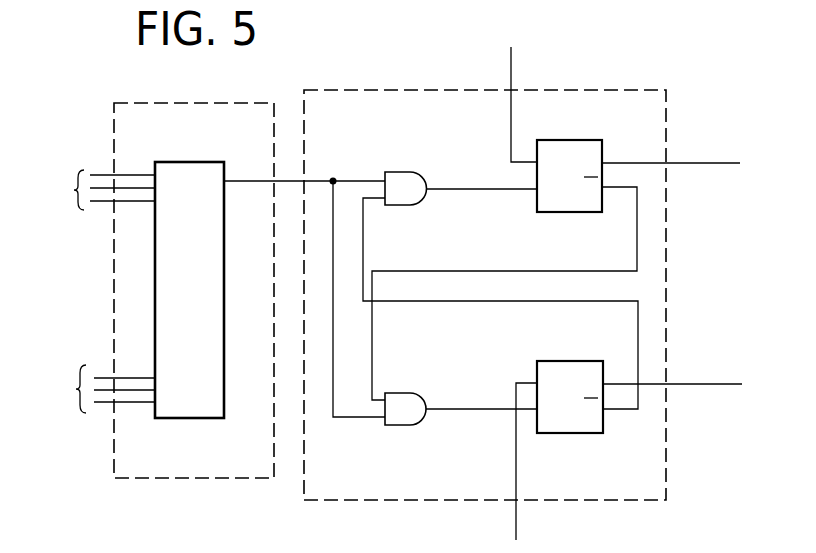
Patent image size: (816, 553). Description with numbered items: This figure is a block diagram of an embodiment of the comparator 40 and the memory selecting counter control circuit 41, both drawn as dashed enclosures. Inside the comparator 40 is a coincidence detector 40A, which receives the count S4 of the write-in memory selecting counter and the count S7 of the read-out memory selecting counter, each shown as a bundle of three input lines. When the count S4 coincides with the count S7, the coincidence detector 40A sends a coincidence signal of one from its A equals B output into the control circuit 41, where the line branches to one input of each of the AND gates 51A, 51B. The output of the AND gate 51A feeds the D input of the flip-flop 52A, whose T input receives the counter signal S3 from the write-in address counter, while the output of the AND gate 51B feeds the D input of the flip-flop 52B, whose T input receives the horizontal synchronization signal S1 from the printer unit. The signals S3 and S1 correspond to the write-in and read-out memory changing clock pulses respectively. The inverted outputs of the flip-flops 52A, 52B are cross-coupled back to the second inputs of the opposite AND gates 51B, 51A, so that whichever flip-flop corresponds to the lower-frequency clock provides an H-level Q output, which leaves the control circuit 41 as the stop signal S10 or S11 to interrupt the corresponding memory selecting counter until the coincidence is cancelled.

The comparator 40 is at (114, 280).
The coincidence detector 40A is at (190, 418).
The memory selecting counter control circuit 41 is at (430, 88).
The AND gate 51A is at (403, 205).
The AND gate 51B is at (405, 425).
The flip-flop 52A is at (563, 212).
The flip-flop 52B is at (572, 433).
The horizontal synchronization signal S1 is at (516, 520).
The counter signal S3 is at (511, 60).
The count of the write-in memory selecting counter S4 is at (96, 190).
The count of the read-out memory selecting counter S7 is at (100, 389).
The stop signal S10 is at (707, 165).
The stop signal S11 is at (707, 384).